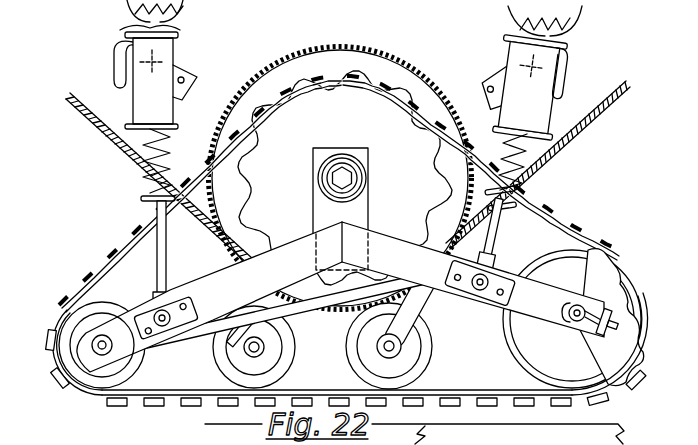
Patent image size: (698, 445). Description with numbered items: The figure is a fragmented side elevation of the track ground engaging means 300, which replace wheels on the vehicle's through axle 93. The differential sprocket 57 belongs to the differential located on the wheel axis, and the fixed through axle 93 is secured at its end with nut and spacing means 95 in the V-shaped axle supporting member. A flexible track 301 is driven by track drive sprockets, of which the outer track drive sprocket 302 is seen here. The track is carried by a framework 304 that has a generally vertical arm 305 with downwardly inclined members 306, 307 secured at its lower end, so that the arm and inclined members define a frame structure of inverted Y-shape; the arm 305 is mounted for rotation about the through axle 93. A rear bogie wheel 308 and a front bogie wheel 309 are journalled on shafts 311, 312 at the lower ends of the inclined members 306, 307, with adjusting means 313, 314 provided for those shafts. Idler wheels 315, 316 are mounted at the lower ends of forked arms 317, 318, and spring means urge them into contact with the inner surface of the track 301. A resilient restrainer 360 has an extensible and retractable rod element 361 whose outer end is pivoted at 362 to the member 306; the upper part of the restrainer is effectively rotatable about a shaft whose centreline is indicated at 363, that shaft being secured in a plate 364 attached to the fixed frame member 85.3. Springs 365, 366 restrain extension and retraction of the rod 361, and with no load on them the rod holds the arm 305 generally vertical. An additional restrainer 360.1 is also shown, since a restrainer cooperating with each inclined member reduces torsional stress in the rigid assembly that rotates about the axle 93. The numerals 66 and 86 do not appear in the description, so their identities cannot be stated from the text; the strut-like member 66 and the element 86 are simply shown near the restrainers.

The differential sprocket 57 is at (406, 63).
The diagonal strut 66 is at (554, 151).
The spring clip 86 is at (125, 38).
The back member 85.3 is at (112, 56).
The fixed through axle 93 is at (352, 176).
The nut and spacing means 95 is at (321, 186).
The track ground engaging means 300 is at (192, 170).
The flexible track 301 is at (167, 228).
The outer track drive sprocket 302 is at (300, 164).
The framework 304 is at (372, 220).
The generally vertical arm 305 is at (322, 148).
The downwardly inclined member 306 is at (224, 275).
The downwardly inclined member 307 is at (443, 308).
The rear bogie wheel 308 is at (74, 306).
The front bogie wheel 309 is at (565, 248).
The shaft 311 is at (125, 372).
The shaft 312 is at (578, 325).
The adjusting means 313 is at (75, 382).
The adjusting means 314 is at (608, 260).
The idler wheel 315 is at (224, 389).
The idler wheel 316 is at (418, 375).
The forked arm 317 is at (288, 334).
The forked arm 318 is at (351, 351).
The resilient restrainer 360 is at (150, 98).
The additional resilient restrainer 360.1 is at (532, 108).
The rod element 361 is at (137, 242).
The pivot 362 is at (158, 338).
The shaft centreline 363 is at (178, 38).
The plate 364 is at (197, 77).
The spring 365 is at (147, 186).
The spring 366 is at (184, 9).